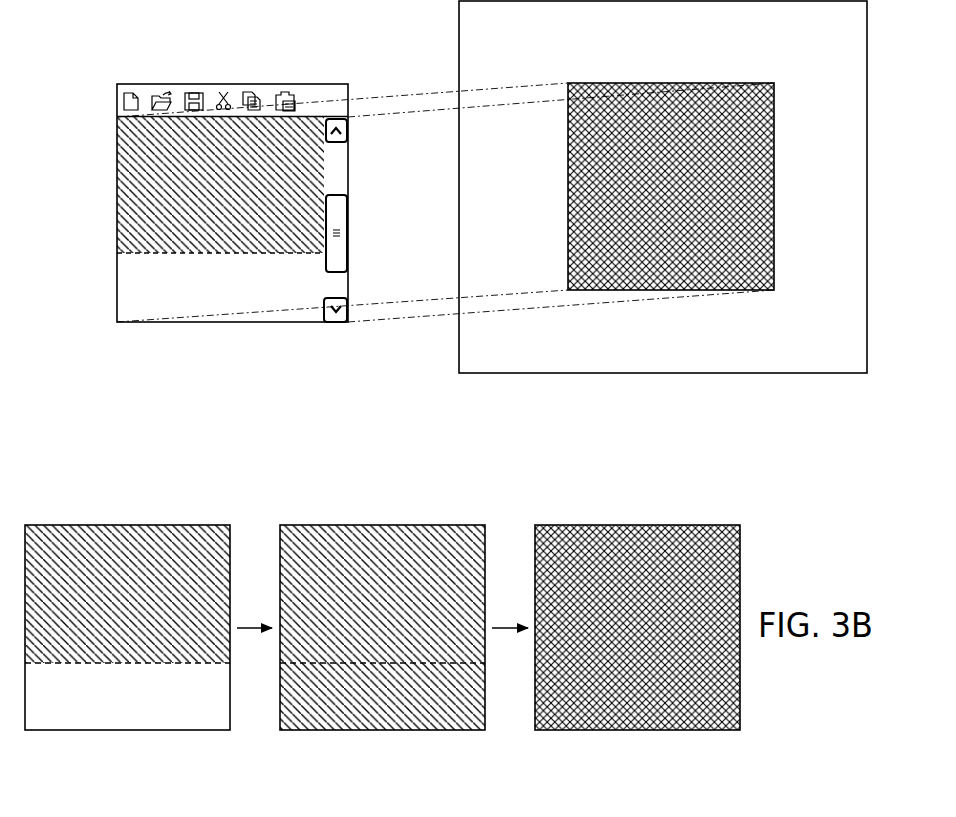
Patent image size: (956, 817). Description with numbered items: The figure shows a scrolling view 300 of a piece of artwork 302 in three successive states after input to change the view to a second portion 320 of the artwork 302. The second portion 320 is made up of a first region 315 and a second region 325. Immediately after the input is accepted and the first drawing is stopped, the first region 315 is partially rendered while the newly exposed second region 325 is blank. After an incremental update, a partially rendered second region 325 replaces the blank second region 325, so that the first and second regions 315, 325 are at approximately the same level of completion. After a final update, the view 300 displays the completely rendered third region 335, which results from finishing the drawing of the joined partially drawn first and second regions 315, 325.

The scrolling view 300 is at (107, 103).
The artwork 302 is at (850, 365).
The first region 315 is at (146, 604).
The second portion 320 is at (103, 120).
The second region 325 is at (150, 707).
The third region 335 is at (657, 639).